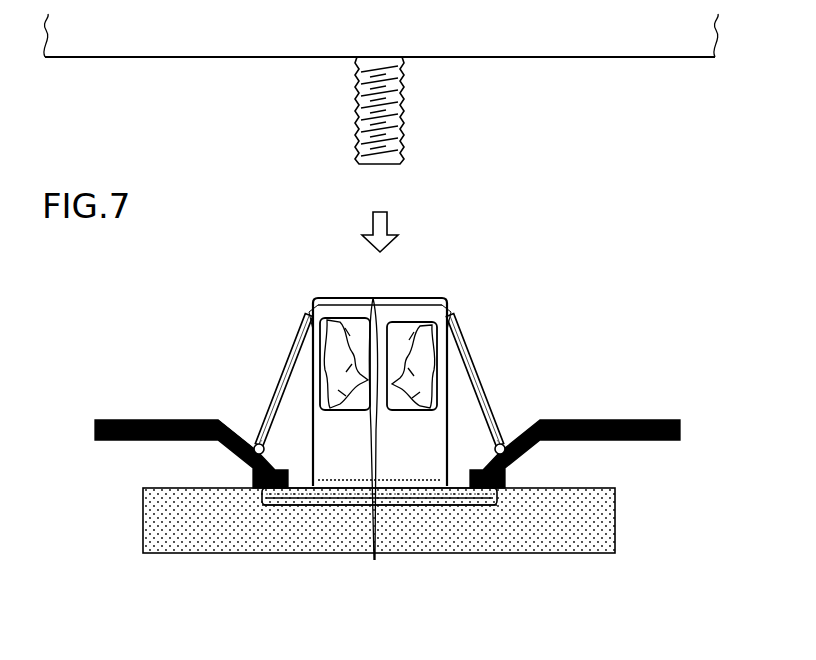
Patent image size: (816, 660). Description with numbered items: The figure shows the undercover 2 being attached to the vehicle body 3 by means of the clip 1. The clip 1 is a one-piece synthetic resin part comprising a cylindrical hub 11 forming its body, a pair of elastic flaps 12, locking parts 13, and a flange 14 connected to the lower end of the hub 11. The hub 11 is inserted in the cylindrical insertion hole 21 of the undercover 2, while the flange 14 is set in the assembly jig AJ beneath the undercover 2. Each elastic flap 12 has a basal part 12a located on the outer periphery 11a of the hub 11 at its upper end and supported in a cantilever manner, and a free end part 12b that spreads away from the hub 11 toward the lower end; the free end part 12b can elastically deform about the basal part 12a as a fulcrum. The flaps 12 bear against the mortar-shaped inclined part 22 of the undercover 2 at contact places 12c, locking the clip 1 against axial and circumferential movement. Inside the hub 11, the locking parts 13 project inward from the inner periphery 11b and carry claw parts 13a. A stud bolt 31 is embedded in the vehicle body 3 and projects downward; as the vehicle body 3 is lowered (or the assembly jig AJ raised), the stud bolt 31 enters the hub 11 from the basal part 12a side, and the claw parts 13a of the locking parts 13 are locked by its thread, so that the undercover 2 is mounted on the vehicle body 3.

The clip 1 is at (378, 413).
The undercover 2 is at (621, 414).
The vehicle body 3 is at (547, 72).
The hub 11 is at (411, 412).
The outer periphery 11a is at (420, 465).
The inner periphery 11b is at (362, 422).
The elastic flap 12 is at (378, 366).
The basal part 12a is at (307, 332).
The free end part 12b is at (256, 440).
The contact place 12c is at (256, 446).
The locking part 13 is at (396, 386).
The claw part 13a is at (373, 298).
The flange 14 is at (307, 502).
The insertion hole 21 is at (466, 488).
The inclined part 22 is at (228, 424).
The stud bolt 31 is at (402, 133).
The assembly jig AJ is at (603, 520).